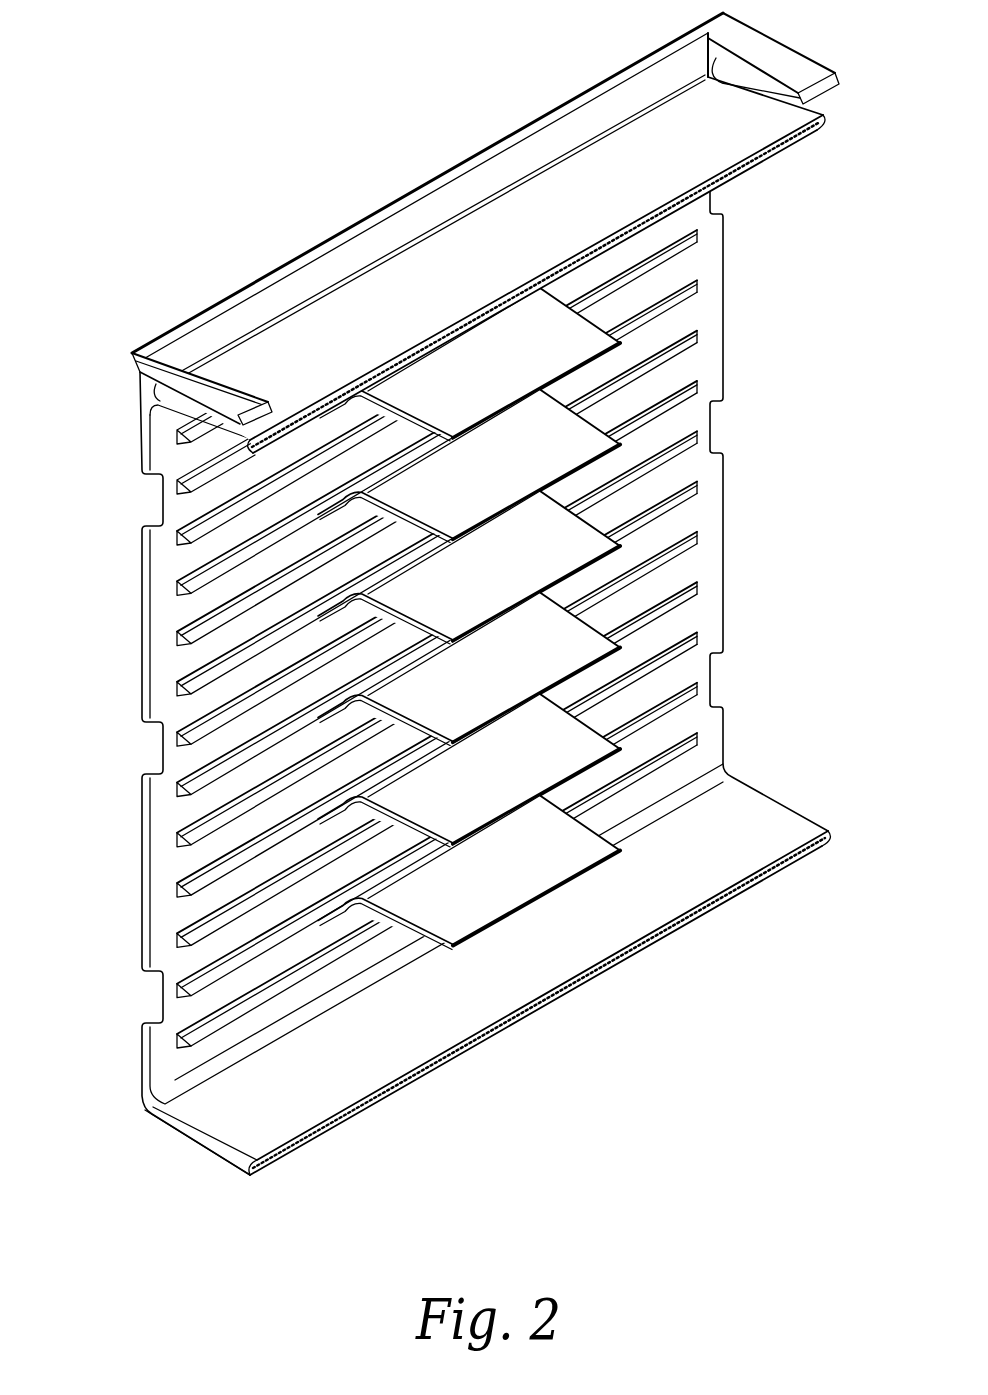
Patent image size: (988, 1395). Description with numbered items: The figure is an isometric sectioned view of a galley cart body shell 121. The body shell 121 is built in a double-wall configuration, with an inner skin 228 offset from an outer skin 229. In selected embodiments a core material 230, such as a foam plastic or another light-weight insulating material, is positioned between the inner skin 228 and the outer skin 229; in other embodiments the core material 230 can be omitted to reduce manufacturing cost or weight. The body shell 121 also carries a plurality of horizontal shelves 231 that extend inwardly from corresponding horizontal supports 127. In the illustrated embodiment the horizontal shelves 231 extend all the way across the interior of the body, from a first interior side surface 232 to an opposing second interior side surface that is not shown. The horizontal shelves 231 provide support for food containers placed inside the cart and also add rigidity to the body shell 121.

The body shell 121 is at (347, 317).
The horizontal supports 127 is at (160, 825).
The inner skin 228 is at (735, 182).
The outer skin 229 is at (733, 137).
The core material 230 is at (642, 212).
The horizontal shelves 231 is at (573, 740).
The first interior side surface 232 is at (665, 332).